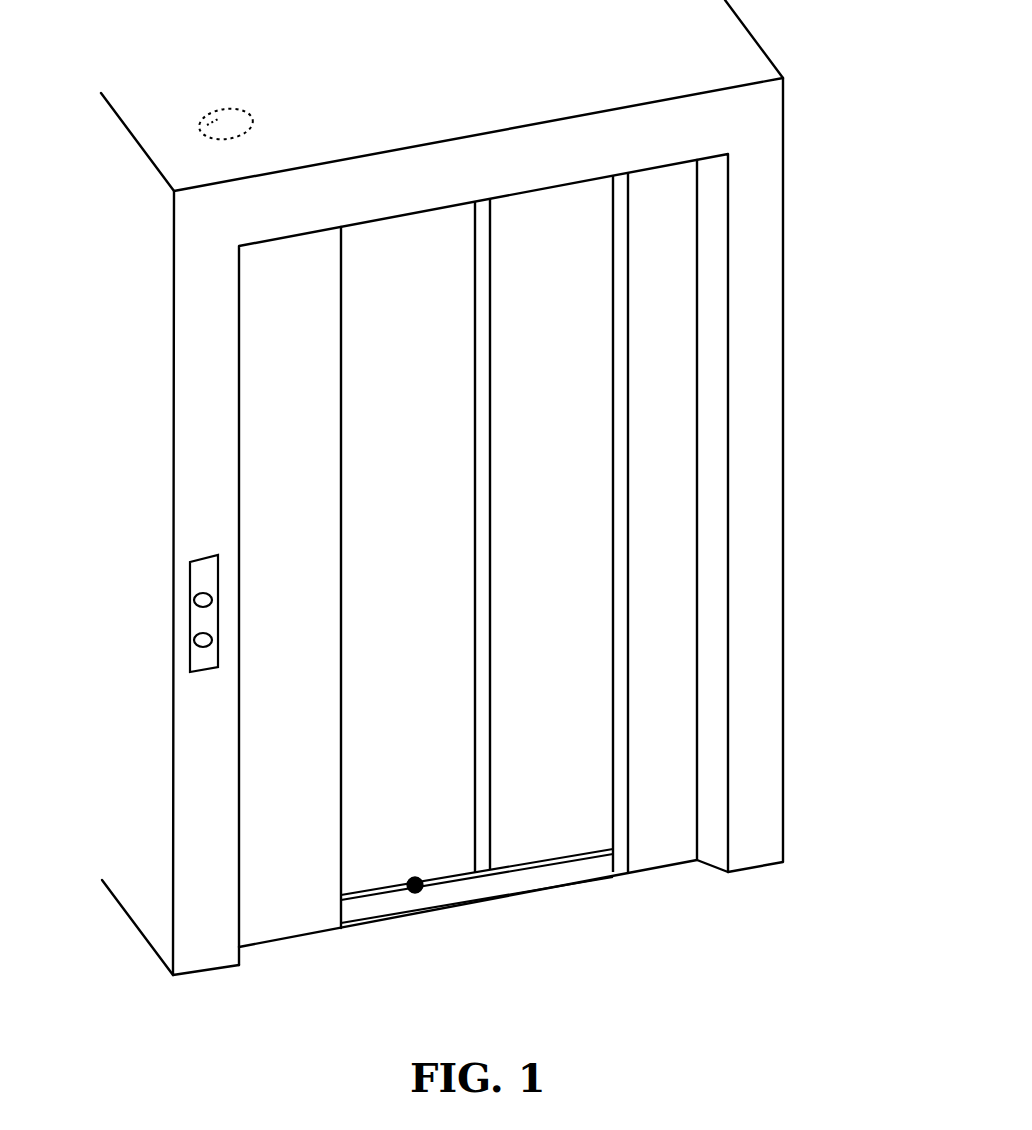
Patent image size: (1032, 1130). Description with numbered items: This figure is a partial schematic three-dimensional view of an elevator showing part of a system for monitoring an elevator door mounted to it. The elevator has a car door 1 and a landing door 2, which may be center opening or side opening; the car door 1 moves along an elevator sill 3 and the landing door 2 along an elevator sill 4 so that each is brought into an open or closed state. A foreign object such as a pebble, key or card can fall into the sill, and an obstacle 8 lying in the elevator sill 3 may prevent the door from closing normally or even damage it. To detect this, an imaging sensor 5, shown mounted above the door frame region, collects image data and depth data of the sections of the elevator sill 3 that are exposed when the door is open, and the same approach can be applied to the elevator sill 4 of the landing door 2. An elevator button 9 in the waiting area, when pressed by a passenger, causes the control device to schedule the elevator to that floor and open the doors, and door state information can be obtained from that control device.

The car door 1 is at (550, 655).
The landing door 2 is at (667, 459).
The elevator sill 3 is at (360, 902).
The elevator sill 4 is at (547, 892).
The imaging sensor 5 is at (200, 128).
The obstacle 8 is at (415, 885).
The elevator button 9 is at (203, 613).